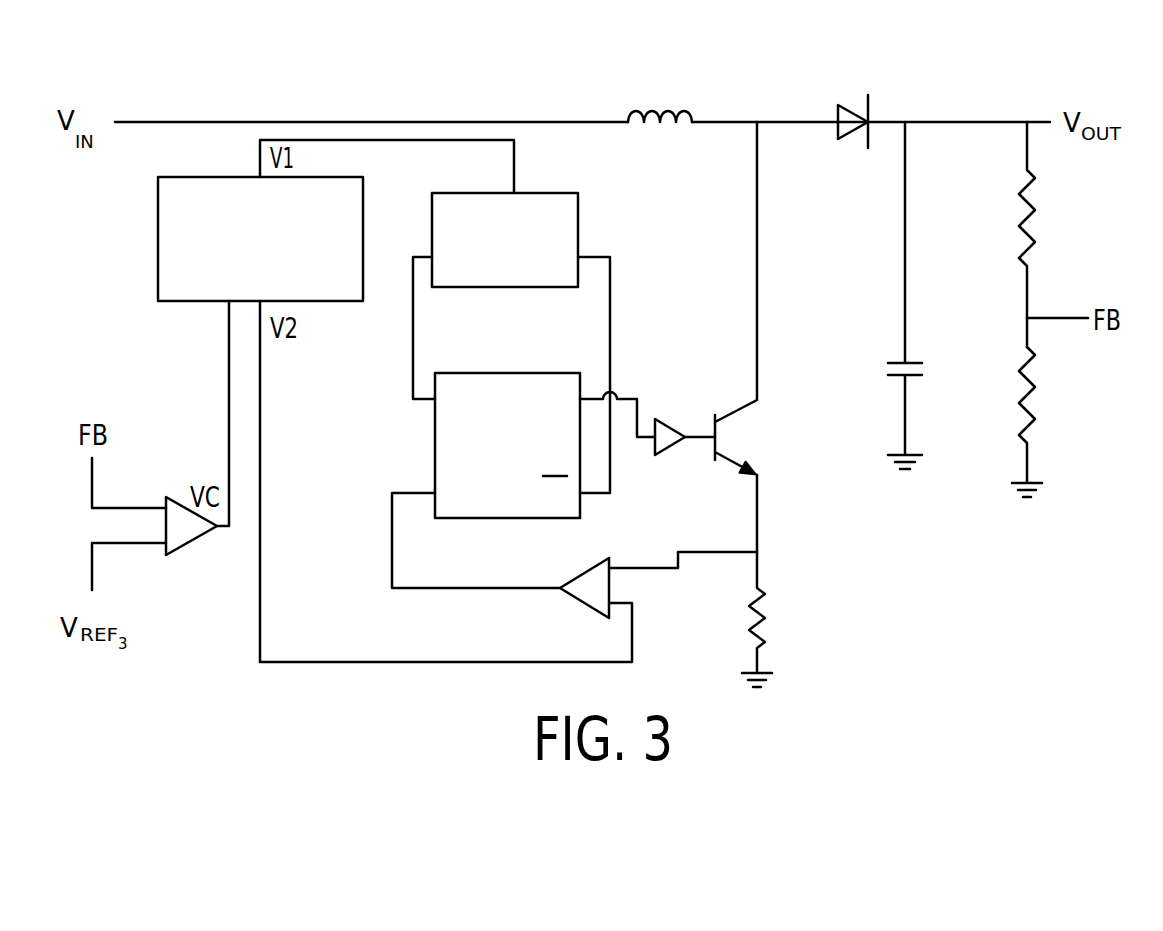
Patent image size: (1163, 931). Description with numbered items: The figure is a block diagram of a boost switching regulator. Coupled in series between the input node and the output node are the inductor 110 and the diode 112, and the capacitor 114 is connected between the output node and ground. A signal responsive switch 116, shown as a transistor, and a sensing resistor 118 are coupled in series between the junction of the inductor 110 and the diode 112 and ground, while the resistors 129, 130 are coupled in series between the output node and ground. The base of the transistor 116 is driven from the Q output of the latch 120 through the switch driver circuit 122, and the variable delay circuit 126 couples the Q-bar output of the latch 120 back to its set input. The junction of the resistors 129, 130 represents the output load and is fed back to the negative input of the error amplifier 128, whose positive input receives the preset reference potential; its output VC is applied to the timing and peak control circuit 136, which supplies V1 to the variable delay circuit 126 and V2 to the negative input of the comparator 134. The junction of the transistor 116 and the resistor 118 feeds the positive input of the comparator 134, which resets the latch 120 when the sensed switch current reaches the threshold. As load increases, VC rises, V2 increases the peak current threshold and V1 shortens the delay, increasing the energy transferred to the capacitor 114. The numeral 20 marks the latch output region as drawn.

The inductor 110 is at (650, 108).
The diode 112 is at (845, 103).
The capacitor 114 is at (922, 368).
The signal responsive switch 116 is at (740, 446).
The sensing resistor 118 is at (763, 600).
The latch 120 is at (507, 373).
The switch driver circuit 122 is at (663, 416).
The variable delay circuit 126 is at (578, 210).
The error amplifier 128 is at (193, 545).
The resistor 129 is at (1040, 223).
The resistor 130 is at (1040, 422).
The comparator 134 is at (580, 603).
The timing and peak control circuit 136 is at (158, 278).
The latch output 20 is at (583, 514).